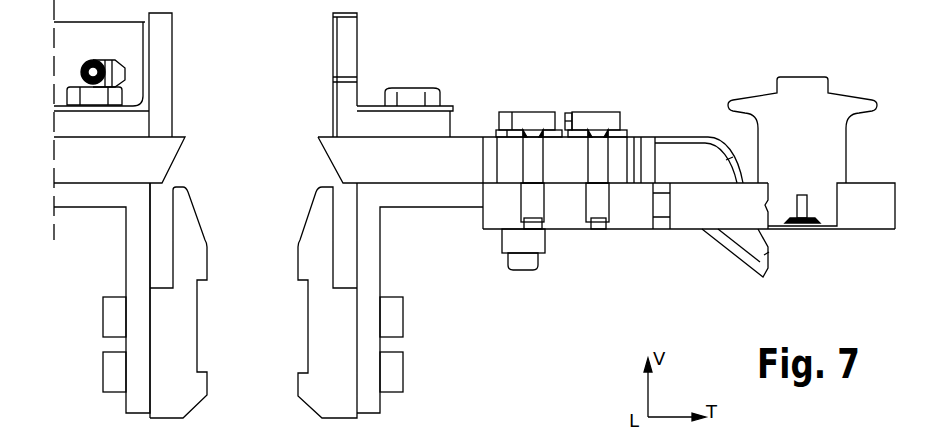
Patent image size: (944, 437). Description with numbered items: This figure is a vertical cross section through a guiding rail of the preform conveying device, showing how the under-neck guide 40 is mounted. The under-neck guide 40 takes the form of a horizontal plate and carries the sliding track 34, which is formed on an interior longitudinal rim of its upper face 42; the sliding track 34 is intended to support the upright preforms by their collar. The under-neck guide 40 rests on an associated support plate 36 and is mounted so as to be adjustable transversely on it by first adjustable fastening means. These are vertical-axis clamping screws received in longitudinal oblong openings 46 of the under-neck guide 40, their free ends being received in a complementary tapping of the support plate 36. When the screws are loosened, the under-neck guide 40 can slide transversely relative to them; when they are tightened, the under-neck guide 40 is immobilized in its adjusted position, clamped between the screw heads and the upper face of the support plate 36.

The sliding track 34 is at (327, 136).
The support plate 36 is at (713, 213).
The under-neck guide 40 is at (443, 160).
The upper face 42 is at (648, 136).
The longitudinal oblong opening 46 is at (563, 162).